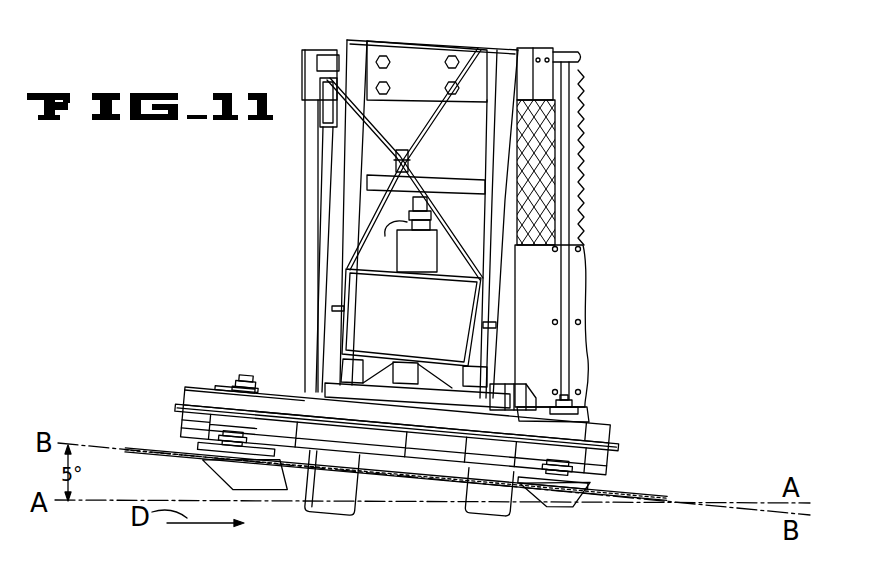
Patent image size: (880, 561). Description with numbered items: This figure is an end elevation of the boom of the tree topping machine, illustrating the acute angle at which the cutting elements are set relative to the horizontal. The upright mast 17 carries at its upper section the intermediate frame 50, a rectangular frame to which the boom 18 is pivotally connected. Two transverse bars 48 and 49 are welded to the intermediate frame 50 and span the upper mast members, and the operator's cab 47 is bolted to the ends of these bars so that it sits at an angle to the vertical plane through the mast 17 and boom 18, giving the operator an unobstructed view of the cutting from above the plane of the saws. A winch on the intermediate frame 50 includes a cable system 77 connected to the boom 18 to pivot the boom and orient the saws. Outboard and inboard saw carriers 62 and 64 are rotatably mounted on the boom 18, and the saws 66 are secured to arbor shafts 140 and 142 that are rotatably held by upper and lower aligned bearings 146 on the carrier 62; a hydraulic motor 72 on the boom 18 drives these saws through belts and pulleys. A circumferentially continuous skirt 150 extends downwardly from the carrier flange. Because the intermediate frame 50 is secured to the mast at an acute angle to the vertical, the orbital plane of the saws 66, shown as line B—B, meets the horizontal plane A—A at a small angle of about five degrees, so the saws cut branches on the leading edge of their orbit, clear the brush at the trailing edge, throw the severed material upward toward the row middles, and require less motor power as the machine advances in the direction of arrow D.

The mast 17 is at (305, 204).
The boom 18 is at (348, 291).
The operator's cab 47 is at (547, 291).
The transverse bar 48 is at (521, 84).
The transverse bar 49 is at (518, 388).
The intermediate frame 50 is at (347, 208).
The outboard saw carrier 62 is at (206, 386).
The inboard saw carrier 64 is at (620, 462).
The saws 66 is at (196, 452).
The hydraulic motor 72 is at (420, 207).
The cable system 77 is at (315, 172).
The arbor shaft 140 is at (562, 398).
The arbor shaft 142 is at (246, 372).
The bearings 146 is at (228, 385).
The skirt 150 is at (186, 432).